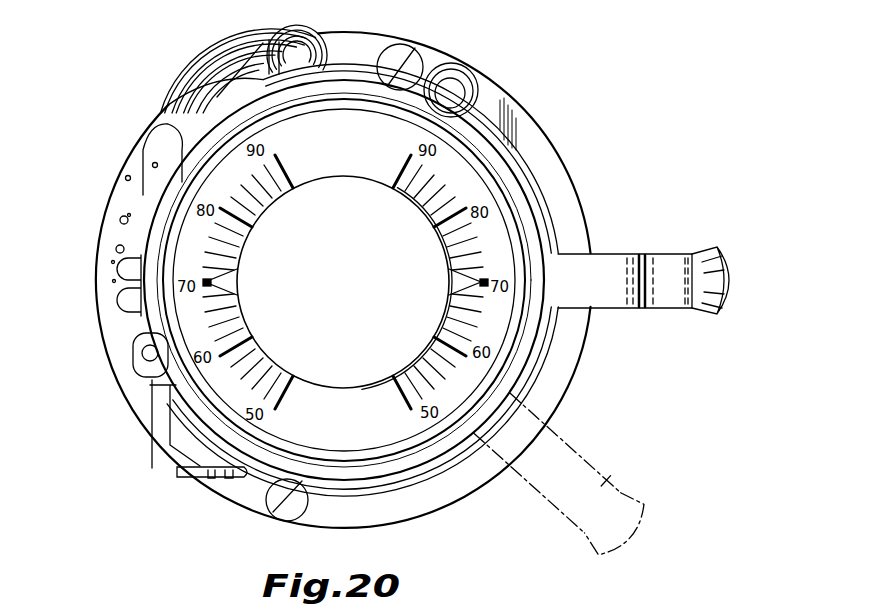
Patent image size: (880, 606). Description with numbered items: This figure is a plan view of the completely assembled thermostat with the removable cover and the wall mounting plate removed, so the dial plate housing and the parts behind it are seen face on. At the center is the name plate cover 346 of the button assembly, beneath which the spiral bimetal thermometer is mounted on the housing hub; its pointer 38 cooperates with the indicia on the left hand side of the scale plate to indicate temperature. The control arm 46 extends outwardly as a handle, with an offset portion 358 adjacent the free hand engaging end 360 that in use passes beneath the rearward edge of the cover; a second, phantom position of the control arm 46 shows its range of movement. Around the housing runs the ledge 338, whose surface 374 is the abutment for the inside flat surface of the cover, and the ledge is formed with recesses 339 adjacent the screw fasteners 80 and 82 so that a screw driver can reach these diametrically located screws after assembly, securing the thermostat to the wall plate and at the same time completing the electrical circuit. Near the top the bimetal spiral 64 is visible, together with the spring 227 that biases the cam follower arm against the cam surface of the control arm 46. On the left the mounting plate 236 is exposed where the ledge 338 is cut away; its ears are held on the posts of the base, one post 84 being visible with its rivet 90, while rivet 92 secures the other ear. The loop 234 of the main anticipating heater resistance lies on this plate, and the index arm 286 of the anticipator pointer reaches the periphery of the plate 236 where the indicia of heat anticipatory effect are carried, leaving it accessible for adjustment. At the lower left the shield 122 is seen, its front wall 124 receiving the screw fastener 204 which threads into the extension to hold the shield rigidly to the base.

The pointer 38 is at (215, 282).
The control arm 46 is at (624, 385).
The bimetal spiral 64 is at (208, 38).
The screw fastener 80 is at (403, 50).
The screw fastener 82 is at (307, 513).
The post 84 is at (485, 80).
The rivet 90 is at (458, 80).
The rivet 92 is at (133, 345).
The shield 122 is at (177, 440).
The front wall 124 is at (180, 473).
The screw fastener 204 is at (198, 473).
The spring 227 is at (288, 24).
The loop 234 is at (452, 442).
The mounting plate 236 is at (160, 120).
The index arm 286 is at (100, 265).
The ledge 338 is at (332, 64).
The recess 339 is at (398, 86).
The name plate cover 346 is at (335, 177).
The offset portion 358 is at (673, 302).
The free hand engaging end 360 is at (732, 289).
The surface 374 is at (353, 72).